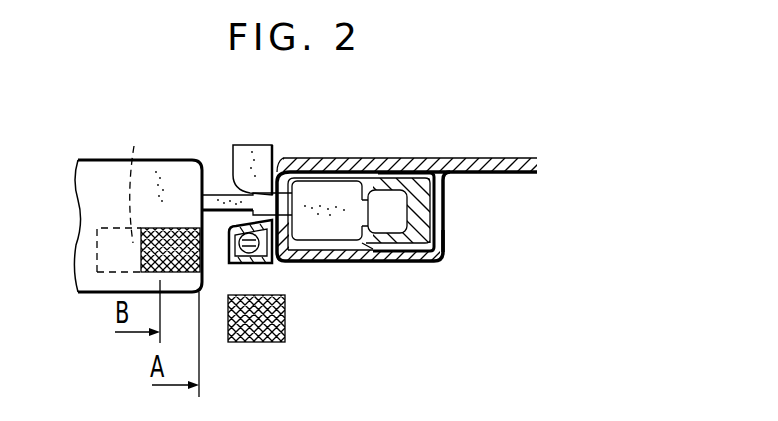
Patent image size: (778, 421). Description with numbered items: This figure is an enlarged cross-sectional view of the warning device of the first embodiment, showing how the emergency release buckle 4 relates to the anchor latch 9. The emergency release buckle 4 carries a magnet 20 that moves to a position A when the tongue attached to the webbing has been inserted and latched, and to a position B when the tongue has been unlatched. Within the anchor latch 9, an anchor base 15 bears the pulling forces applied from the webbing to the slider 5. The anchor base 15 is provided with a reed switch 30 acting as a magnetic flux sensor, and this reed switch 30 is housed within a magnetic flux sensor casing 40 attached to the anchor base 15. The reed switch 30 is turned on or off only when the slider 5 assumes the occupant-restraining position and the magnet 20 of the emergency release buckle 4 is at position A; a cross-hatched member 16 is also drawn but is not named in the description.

The emergency release buckle 4 is at (182, 180).
The slider 5 is at (220, 193).
The anchor latch 9 is at (456, 190).
The anchor base 15 is at (287, 160).
The cushion member 16 is at (284, 327).
The magnet 20 is at (135, 177).
The reed switch 30 is at (260, 264).
The magnetic flux sensor casing 40 is at (229, 236).